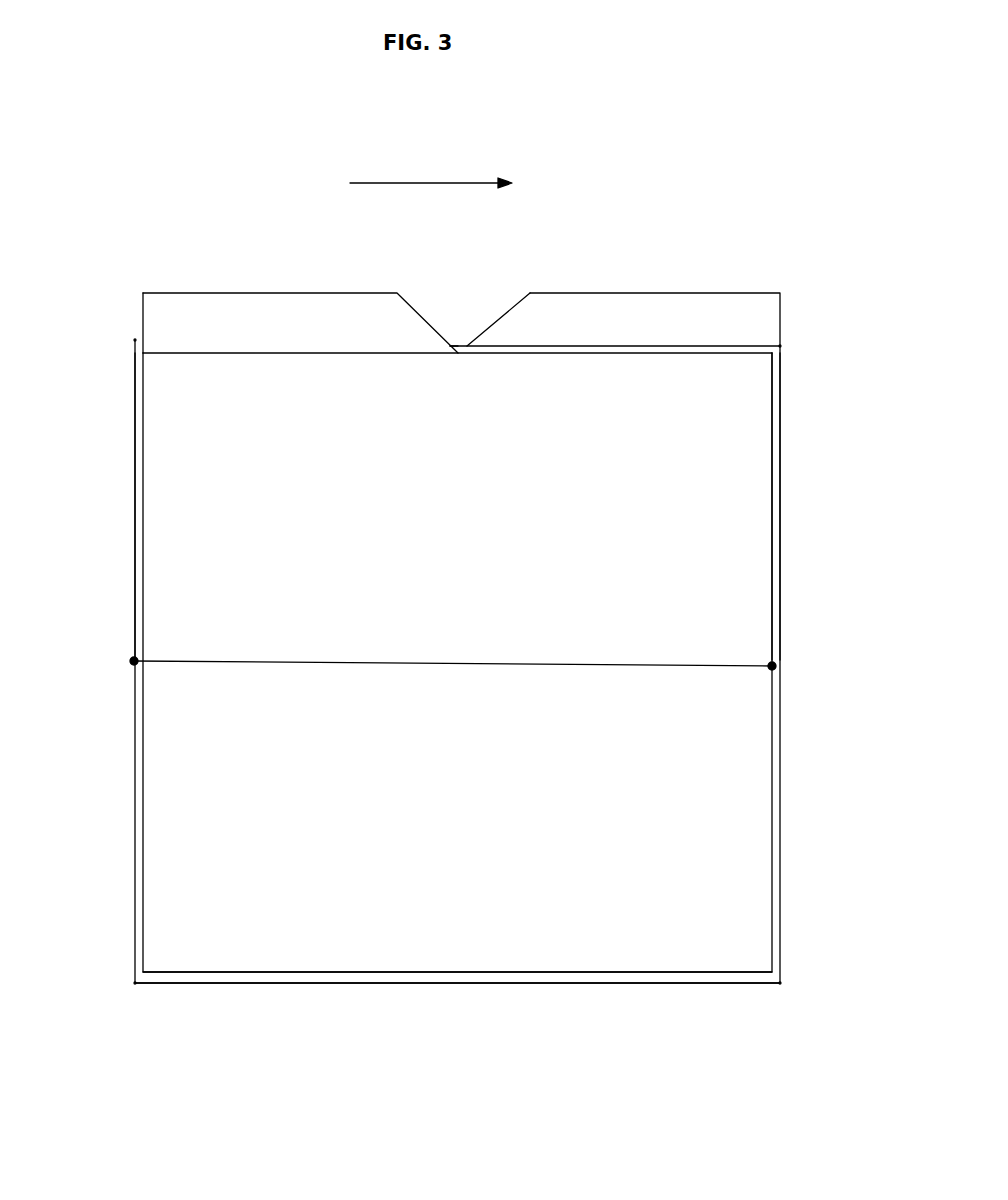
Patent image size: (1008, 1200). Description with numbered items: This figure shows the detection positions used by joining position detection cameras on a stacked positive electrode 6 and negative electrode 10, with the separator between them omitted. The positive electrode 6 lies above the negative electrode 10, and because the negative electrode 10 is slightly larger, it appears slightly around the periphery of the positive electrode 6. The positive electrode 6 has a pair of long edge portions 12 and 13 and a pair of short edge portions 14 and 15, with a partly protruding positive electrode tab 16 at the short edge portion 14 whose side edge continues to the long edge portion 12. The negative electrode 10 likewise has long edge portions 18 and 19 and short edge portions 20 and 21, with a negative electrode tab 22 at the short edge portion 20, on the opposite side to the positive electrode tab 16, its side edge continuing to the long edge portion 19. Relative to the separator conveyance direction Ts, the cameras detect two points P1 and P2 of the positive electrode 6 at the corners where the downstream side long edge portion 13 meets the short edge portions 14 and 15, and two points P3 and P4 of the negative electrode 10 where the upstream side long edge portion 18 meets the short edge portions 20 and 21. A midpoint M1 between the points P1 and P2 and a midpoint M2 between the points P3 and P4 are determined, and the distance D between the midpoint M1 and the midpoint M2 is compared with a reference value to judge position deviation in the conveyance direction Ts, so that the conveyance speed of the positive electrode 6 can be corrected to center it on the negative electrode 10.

The positive electrode 6 is at (180, 795).
The negative electrode 10 is at (772, 480).
The long edge portion 12 is at (143, 461).
The long edge portion 13 is at (772, 569).
The short edge portion 14 is at (538, 352).
The short edge portion 15 is at (474, 972).
The positive electrode tab 16 is at (182, 304).
The long edge portion 18 is at (135, 515).
The long edge portion 19 is at (780, 608).
The short edge portion 20 is at (458, 343).
The short edge portion 21 is at (565, 983).
The negative electrode tab 22 is at (678, 310).
The distance D is at (468, 664).
The midpoint M1 is at (776, 666).
The midpoint M2 is at (130, 660).
The point P1 is at (780, 347).
The point P2 is at (780, 973).
The point P3 is at (135, 341).
The point P4 is at (135, 981).
The separator conveyance direction Ts is at (431, 172).